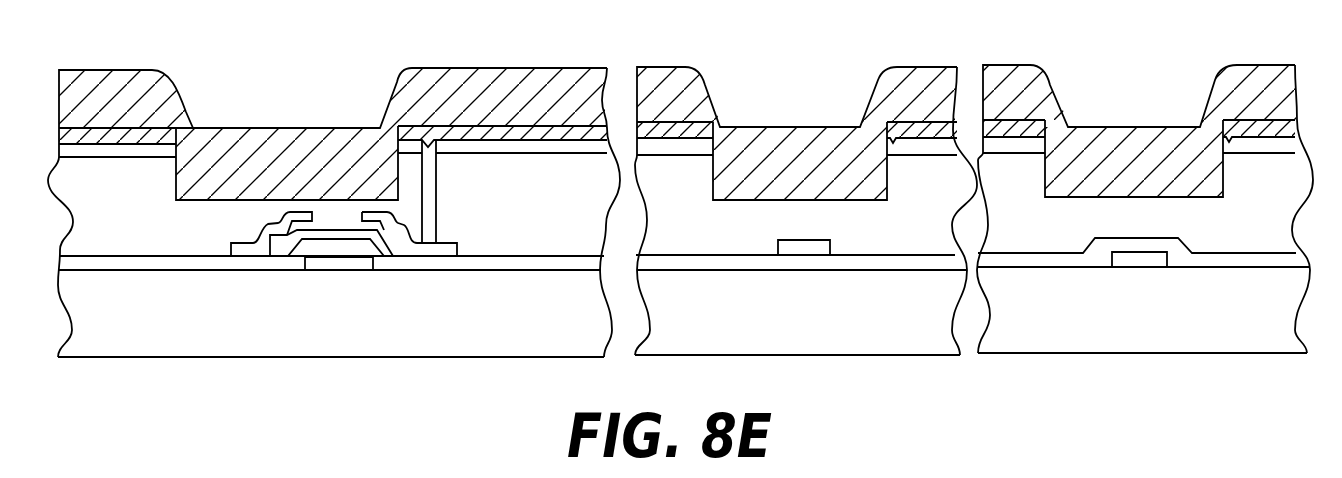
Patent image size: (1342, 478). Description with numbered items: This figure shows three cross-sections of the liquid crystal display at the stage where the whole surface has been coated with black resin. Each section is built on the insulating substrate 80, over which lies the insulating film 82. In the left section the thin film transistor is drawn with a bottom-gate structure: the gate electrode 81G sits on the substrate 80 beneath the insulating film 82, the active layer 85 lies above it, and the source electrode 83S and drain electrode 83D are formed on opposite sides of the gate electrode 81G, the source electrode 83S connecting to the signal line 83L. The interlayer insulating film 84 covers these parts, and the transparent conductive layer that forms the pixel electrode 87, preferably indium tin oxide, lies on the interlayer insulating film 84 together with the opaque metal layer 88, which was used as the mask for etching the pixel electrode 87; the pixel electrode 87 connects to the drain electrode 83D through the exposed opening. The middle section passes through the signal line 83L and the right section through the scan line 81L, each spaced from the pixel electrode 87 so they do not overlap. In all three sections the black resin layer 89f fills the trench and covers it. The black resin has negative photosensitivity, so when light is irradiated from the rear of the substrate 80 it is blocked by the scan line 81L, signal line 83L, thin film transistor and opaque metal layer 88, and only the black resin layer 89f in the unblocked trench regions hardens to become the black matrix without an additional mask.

The insulating substrate 80 is at (580, 340).
The gate electrode 81G is at (337, 262).
The scan line 81L is at (1142, 262).
The insulating film 82 is at (913, 263).
The signal line 83L is at (254, 253).
The source electrode 83S is at (288, 222).
The drain electrode 83D is at (413, 250).
The interlayer insulating film 84 is at (573, 164).
The active layer 85 is at (338, 232).
The pixel electrode 87 is at (488, 147).
The opaque metal layer 88 is at (428, 142).
The black resin layer 89f is at (218, 162).